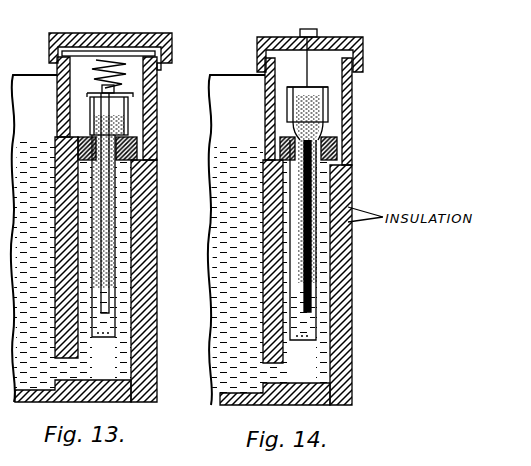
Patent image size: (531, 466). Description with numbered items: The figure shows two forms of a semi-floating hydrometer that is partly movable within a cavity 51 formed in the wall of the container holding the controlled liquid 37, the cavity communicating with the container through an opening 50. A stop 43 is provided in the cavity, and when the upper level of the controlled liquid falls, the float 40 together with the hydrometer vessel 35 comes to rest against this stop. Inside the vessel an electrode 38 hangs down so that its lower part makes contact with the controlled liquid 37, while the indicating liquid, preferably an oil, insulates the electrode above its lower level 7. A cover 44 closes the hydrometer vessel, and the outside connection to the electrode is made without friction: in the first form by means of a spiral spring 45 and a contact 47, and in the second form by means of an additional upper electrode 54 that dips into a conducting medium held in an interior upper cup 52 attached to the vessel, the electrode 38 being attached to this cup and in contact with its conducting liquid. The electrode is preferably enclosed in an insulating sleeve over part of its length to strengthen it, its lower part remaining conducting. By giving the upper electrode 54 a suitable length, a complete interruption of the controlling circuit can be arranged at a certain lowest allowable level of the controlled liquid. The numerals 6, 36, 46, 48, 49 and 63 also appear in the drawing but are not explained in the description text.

In FIG. 13, the lamp base 6 is at (97, 113).
In FIG. 14, the lamp base 6 is at (329, 103).
In FIG. 13, the lower level of the indicating liquid 7 is at (112, 296).
In FIG. 14, the lower level of the indicating liquid 7 is at (316, 304).
In FIG. 13, the hydrometer vessel 35 is at (128, 250).
In FIG. 14, the hydrometer vessel 35 is at (348, 175).
In FIG. 13, the outer tube wall 36 is at (157, 232).
In FIG. 14, the outer tube wall 36 is at (348, 232).
In FIG. 13, the controlled liquid 37 is at (22, 143).
In FIG. 14, the controlled liquid 37 is at (318, 356).
In FIG. 13, the electrode 38 is at (110, 103).
In FIG. 14, the electrode 38 is at (317, 318).
In FIG. 13, the float 40 is at (137, 158).
In FIG. 14, the float 40 is at (333, 138).
In FIG. 13, the stop 43 is at (157, 203).
In FIG. 14, the stop 43 is at (348, 197).
In FIG. 13, the cover of the hydrometer vessel 44 is at (99, 83).
In FIG. 13, the spiral spring 45 is at (158, 95).
In FIG. 13, the plate 46 is at (82, 51).
In FIG. 13, the contact 47 is at (162, 70).
In FIG. 13, the cap 48 is at (138, 34).
In FIG. 13, the bottom 49 is at (157, 393).
In FIG. 14, the bottom 49 is at (352, 393).
In FIG. 13, the opening 50 is at (53, 366).
In FIG. 14, the opening 50 is at (264, 370).
In FIG. 13, the cavity 51 is at (118, 350).
In FIG. 14, the interior upper cup 52 is at (329, 92).
In FIG. 14, the additional electrode 54 is at (309, 78).
In FIG. 14, the filament 63 is at (296, 108).